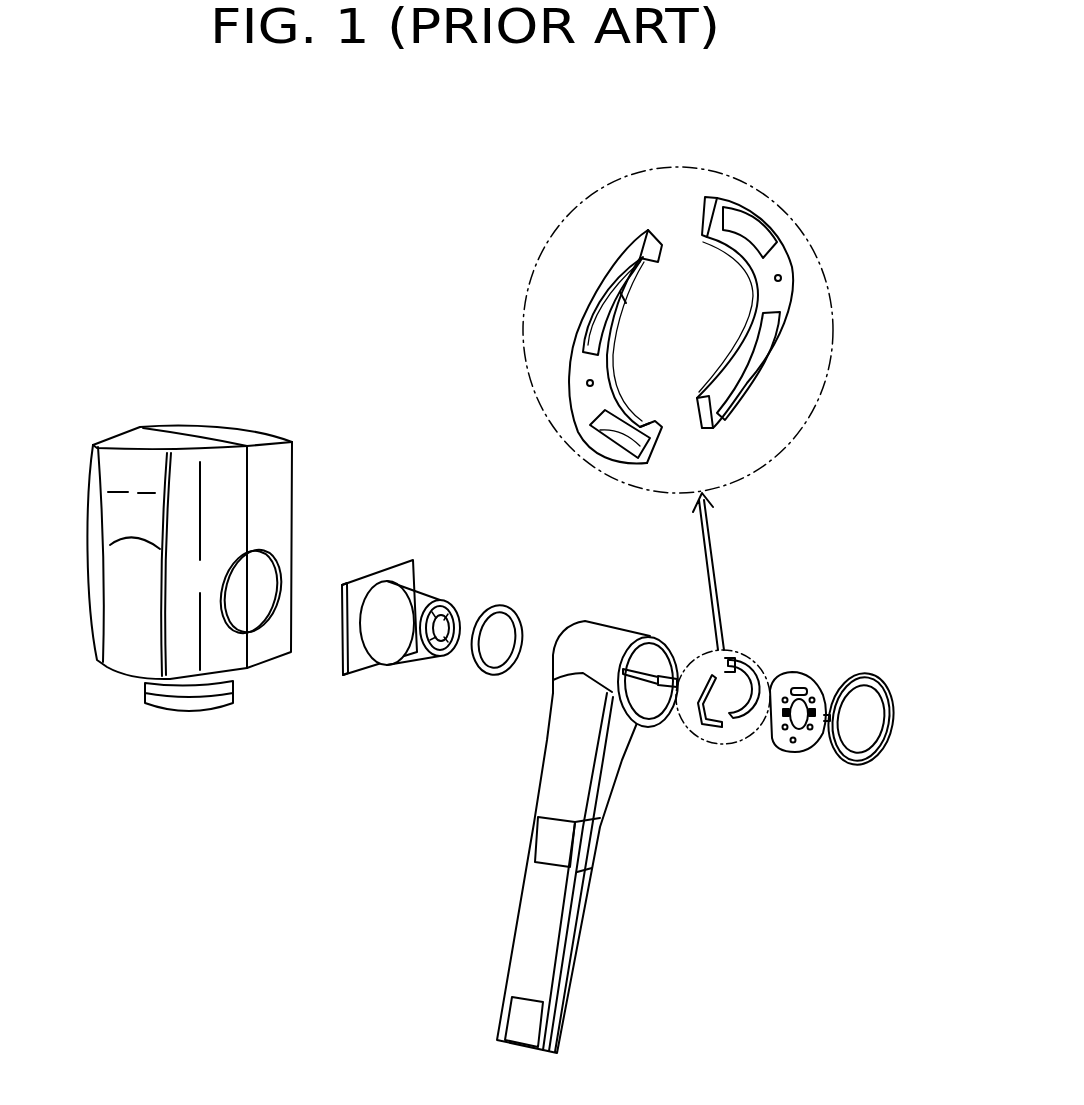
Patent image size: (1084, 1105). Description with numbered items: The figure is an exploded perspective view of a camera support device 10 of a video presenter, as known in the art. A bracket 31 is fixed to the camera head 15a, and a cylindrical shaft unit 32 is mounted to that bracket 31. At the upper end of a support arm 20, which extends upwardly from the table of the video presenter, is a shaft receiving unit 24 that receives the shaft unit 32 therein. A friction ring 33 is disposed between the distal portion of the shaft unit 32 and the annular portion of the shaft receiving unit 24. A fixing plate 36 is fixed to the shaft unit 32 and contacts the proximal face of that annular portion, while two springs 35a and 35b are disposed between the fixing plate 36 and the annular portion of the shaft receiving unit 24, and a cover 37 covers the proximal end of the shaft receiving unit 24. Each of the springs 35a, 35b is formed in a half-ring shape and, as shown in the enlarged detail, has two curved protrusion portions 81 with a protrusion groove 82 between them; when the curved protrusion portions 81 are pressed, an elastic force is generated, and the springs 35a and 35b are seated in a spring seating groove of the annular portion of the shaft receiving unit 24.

The camera support device 10 is at (807, 800).
The camera head 15a is at (285, 480).
The support arm 20 is at (580, 933).
The shaft receiving unit 24 is at (598, 630).
The bracket 31 is at (392, 568).
The shaft unit 32 is at (430, 600).
The friction ring 33 is at (503, 603).
The spring 35a is at (608, 277).
The spring 35b is at (797, 235).
The fixing plate 36 is at (803, 678).
The cover 37 is at (860, 673).
The curved protrusion portion 81 is at (625, 298).
The protrusion groove 82 is at (595, 383).